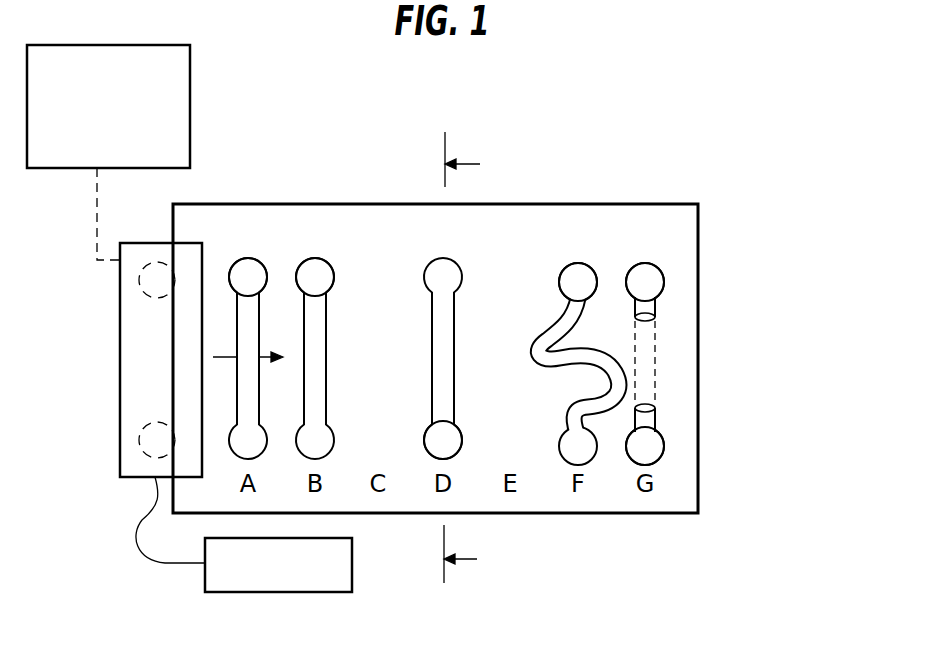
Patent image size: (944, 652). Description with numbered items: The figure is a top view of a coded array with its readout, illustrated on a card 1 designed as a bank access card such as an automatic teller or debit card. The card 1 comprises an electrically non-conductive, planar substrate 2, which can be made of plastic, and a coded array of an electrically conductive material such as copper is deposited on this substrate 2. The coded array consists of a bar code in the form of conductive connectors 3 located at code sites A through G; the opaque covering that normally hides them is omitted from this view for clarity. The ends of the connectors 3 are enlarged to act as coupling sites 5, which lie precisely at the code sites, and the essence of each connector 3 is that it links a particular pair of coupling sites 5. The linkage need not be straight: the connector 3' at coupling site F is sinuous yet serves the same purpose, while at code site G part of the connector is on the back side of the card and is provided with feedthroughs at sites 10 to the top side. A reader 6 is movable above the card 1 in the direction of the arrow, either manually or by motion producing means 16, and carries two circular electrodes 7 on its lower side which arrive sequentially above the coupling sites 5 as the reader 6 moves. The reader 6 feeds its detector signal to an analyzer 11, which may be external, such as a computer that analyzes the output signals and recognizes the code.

The card 1 is at (716, 266).
The substrate 2 is at (523, 230).
The conductive connectors 3 is at (356, 358).
The sinuous connector 3' is at (570, 364).
The coupling sites 5 is at (245, 259).
The reader 6 is at (142, 363).
The circular electrodes 7 is at (131, 306).
The feedthrough sites 10 is at (657, 315).
The analyzer 11 is at (288, 592).
The motion producing means 16 is at (192, 123).